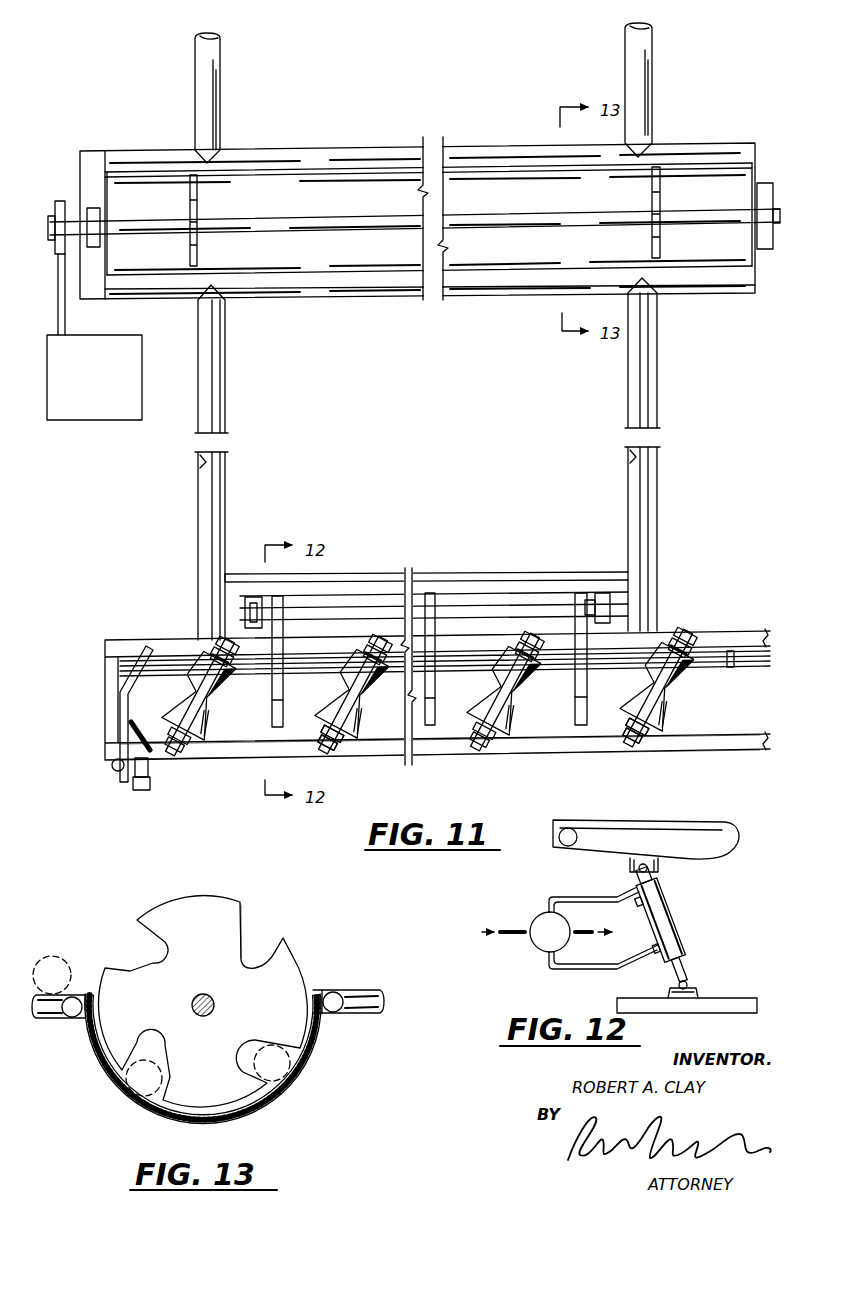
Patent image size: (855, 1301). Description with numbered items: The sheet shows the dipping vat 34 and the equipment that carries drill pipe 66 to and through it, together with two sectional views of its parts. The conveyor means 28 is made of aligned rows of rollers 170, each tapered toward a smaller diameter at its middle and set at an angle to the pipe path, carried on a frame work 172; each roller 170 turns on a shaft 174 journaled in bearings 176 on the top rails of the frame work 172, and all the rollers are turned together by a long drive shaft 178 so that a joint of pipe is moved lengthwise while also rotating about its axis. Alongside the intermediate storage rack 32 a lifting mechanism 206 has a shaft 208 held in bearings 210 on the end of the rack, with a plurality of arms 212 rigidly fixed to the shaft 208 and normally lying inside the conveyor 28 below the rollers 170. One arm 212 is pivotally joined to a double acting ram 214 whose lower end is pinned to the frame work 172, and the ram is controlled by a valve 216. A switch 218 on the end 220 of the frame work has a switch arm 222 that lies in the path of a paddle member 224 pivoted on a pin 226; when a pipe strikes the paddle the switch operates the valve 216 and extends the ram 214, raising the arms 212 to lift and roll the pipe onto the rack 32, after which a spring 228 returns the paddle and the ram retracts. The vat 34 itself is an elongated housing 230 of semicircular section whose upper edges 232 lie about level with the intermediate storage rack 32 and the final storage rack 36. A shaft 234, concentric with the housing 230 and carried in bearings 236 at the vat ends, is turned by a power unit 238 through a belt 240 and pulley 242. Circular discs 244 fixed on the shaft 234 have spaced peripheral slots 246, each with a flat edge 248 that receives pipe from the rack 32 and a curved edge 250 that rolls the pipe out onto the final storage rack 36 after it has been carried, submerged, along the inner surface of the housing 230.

In FIG. 11, the conveyor means 28 is at (752, 754).
In FIG. 11, the intermediate storage rack 32 is at (442, 440).
In FIG. 13, the intermediate storage rack 32 is at (357, 996).
In FIG. 11, the dipping vat 34 is at (157, 150).
In FIG. 13, the dipping vat 34 is at (292, 1086).
In FIG. 11, the final storage rack 36 is at (422, 75).
In FIG. 13, the final storage rack 36 is at (60, 1020).
In FIG. 13, the drill pipe 66 is at (58, 957).
In FIG. 11, the roller 170 is at (210, 714).
In FIG. 11, the frame work 172 is at (752, 740).
In FIG. 12, the frame work 172 is at (722, 1000).
In FIG. 11, the shaft 174 is at (325, 745).
In FIG. 11, the bearings 176 is at (333, 748).
In FIG. 11, the drive shaft 178 is at (757, 668).
In FIG. 11, the lifting mechanism 206 is at (452, 592).
In FIG. 11, the shaft 208 is at (465, 612).
In FIG. 12, the shaft 208 is at (571, 828).
In FIG. 11, the bearings 210 is at (602, 598).
In FIG. 11, the arms 212 is at (283, 695).
In FIG. 12, the arms 212 is at (690, 838).
In FIG. 12, the double acting ram 214 is at (662, 903).
In FIG. 12, the valve 216 is at (540, 915).
In FIG. 11, the switch 218 is at (150, 765).
In FIG. 11, the end of the conveyor frame work 220 is at (108, 718).
In FIG. 11, the switch arm 222 is at (144, 785).
In FIG. 11, the paddle member 224 is at (120, 698).
In FIG. 11, the pin 226 is at (110, 766).
In FIG. 11, the spring 228 is at (140, 728).
In FIG. 13, the housing 230 is at (307, 1055).
In FIG. 13, the upper edges 232 is at (319, 992).
In FIG. 13, the shaft 234 is at (191, 1005).
In FIG. 11, the bearings 236 is at (758, 195).
In FIG. 11, the power unit 238 is at (110, 388).
In FIG. 11, the belt 240 is at (66, 331).
In FIG. 11, the pulley 242 is at (76, 200).
In FIG. 13, the circular disc 244 is at (178, 916).
In FIG. 13, the slot 246 is at (257, 960).
In FIG. 13, the flat edge 248 is at (286, 945).
In FIG. 13, the curved edge 250 is at (243, 916).